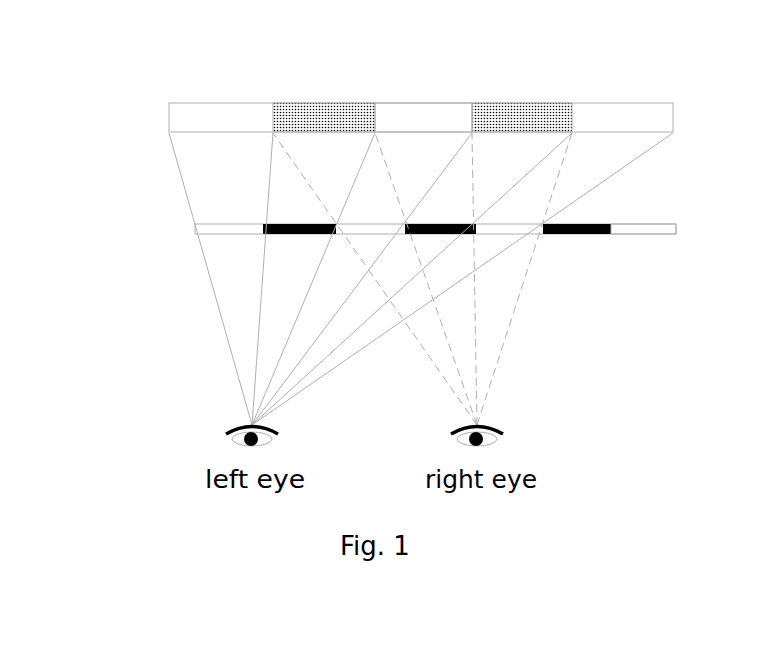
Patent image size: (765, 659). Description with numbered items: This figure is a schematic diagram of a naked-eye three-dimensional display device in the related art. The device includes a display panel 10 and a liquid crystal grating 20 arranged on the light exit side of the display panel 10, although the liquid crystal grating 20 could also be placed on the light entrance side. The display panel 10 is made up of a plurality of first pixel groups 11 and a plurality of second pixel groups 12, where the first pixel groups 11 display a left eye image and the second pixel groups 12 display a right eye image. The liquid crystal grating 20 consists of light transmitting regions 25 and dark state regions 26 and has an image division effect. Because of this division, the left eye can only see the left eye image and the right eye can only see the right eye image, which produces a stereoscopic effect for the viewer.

The display panel 10 is at (169, 117).
The first pixel groups 11 is at (424, 103).
The second pixel groups 12 is at (327, 103).
The liquid crystal grating 20 is at (195, 229).
The light transmitting regions 25 is at (638, 235).
The dark state regions 26 is at (573, 235).